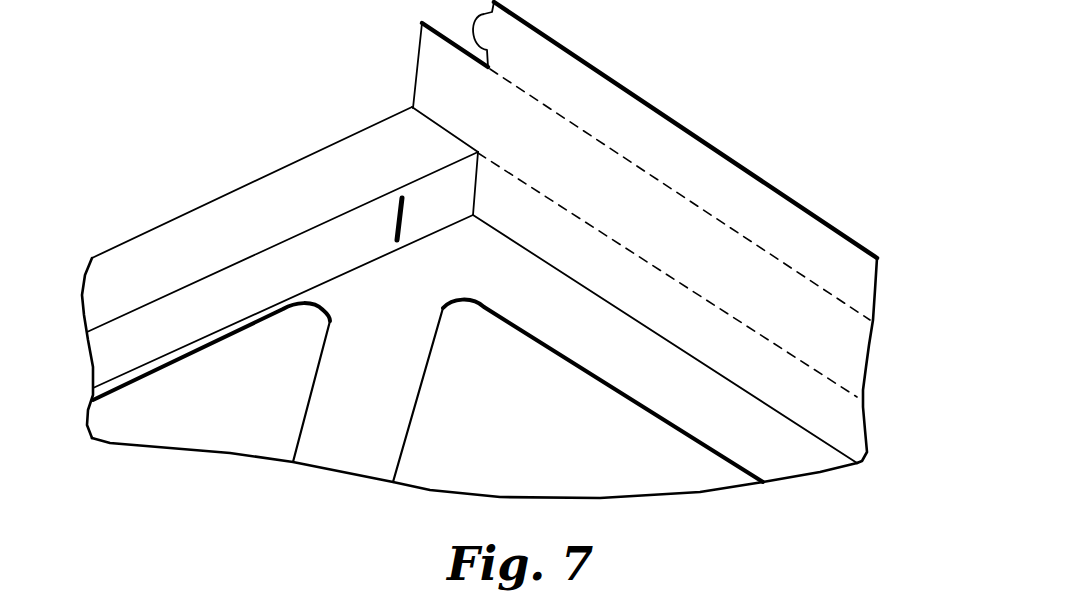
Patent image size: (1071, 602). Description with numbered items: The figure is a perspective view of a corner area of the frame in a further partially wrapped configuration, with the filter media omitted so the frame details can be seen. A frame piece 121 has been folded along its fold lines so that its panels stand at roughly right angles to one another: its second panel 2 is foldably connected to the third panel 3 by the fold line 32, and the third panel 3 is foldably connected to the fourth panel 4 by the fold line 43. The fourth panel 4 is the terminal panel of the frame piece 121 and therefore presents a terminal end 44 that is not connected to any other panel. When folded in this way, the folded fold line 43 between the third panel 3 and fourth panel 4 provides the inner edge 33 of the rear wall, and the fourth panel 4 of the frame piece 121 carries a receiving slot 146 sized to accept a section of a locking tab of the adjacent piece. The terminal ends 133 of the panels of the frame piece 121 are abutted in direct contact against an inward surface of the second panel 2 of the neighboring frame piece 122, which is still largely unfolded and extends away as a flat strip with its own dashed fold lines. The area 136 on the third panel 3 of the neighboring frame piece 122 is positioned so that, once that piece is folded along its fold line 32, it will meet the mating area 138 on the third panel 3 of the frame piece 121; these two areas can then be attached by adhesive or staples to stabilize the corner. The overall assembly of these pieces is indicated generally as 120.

The second panel 2 is at (543, 240).
The third panel 3 is at (252, 200).
The fourth panel 4 is at (143, 343).
The fold line 32 is at (173, 220).
The inner edge 33 is at (325, 223).
The fold line 43 is at (245, 262).
The terminal end 44 is at (208, 333).
The panel 120 is at (727, 91).
The frame piece 121 is at (73, 288).
The neighboring frame piece 122 is at (882, 448).
The terminal ends 133 is at (476, 187).
The area 136 is at (428, 68).
The mating area 138 is at (390, 150).
The receiving slot 146 is at (402, 223).